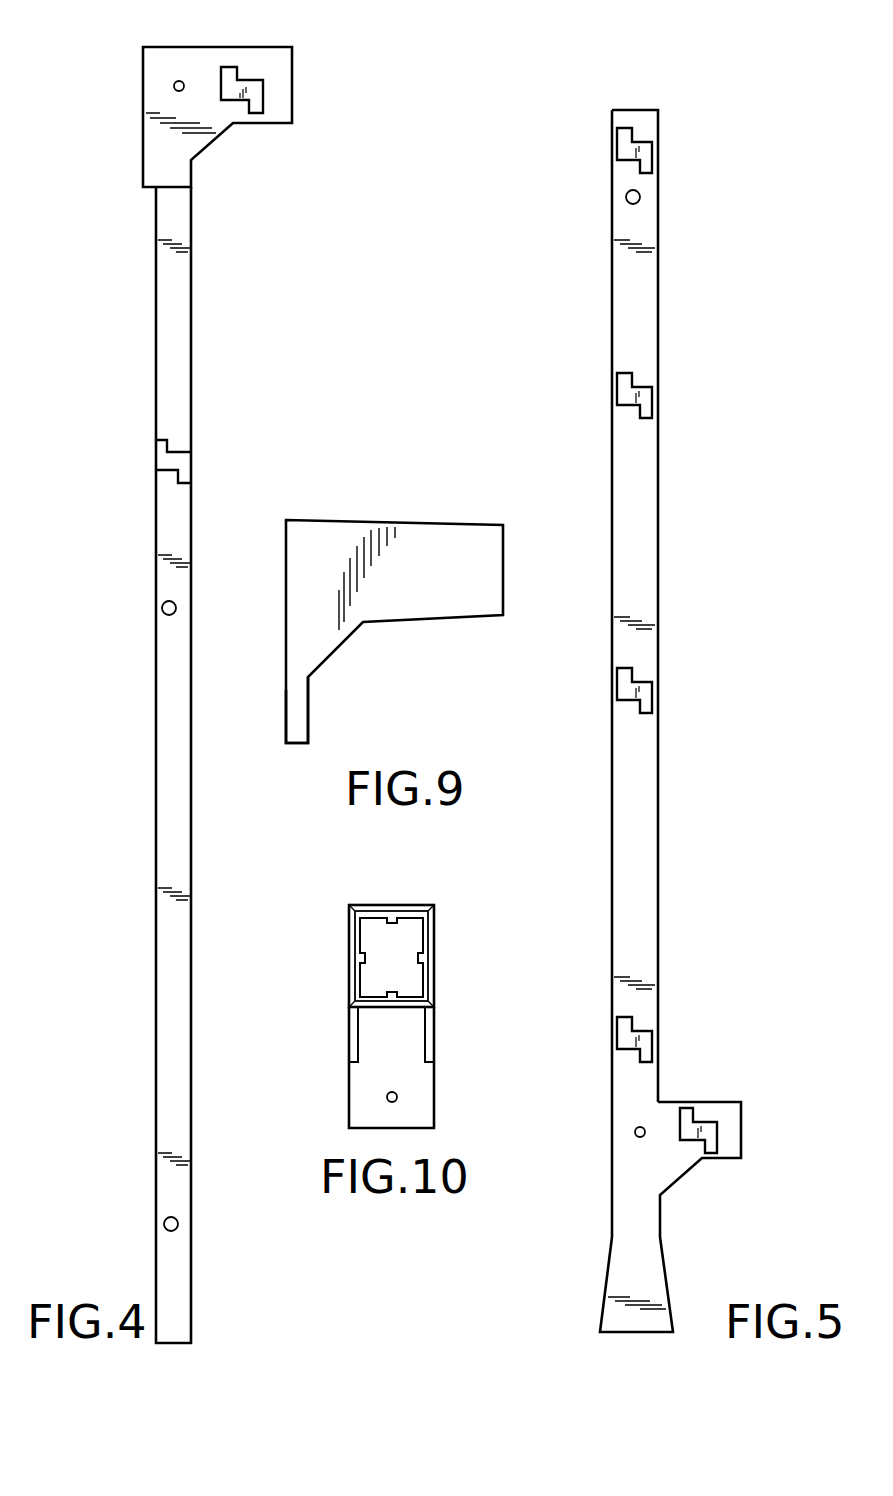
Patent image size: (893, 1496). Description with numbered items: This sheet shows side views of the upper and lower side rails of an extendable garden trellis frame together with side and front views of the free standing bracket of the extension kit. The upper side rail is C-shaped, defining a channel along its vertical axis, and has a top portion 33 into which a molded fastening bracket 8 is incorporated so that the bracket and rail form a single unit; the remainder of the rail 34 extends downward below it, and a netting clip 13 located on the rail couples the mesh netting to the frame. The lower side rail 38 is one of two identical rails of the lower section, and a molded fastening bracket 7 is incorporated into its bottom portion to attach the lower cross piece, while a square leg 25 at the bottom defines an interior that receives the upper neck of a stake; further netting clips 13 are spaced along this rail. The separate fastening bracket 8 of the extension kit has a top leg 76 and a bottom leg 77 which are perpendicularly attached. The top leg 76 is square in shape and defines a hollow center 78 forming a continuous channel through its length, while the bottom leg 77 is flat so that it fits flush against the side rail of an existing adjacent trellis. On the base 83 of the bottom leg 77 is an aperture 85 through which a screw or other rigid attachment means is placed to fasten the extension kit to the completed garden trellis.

In FIG. 5, the fastening bracket 7 is at (727, 1100).
In FIG. 4, the fastening bracket 8 is at (170, 58).
In FIG. 9, the fastening bracket 8 is at (394, 580).
In FIG. 4, the netting clip 13 is at (162, 462).
In FIG. 5, the netting clip 13 is at (645, 690).
In FIG. 5, the square leg 25 is at (645, 1272).
In FIG. 4, the top portion 33 is at (168, 290).
In FIG. 4, the lower post section 34 is at (156, 772).
In FIG. 5, the lower side rail 38 is at (645, 836).
In FIG. 9, the top leg 76 is at (460, 589).
In FIG. 10, the top leg 76 is at (417, 956).
In FIG. 9, the bottom leg 77 is at (297, 717).
In FIG. 10, the bottom leg 77 is at (417, 1073).
In FIG. 10, the hollow center 78 is at (398, 950).
In FIG. 10, the base 83 is at (408, 1063).
In FIG. 10, the aperture 85 is at (397, 1100).